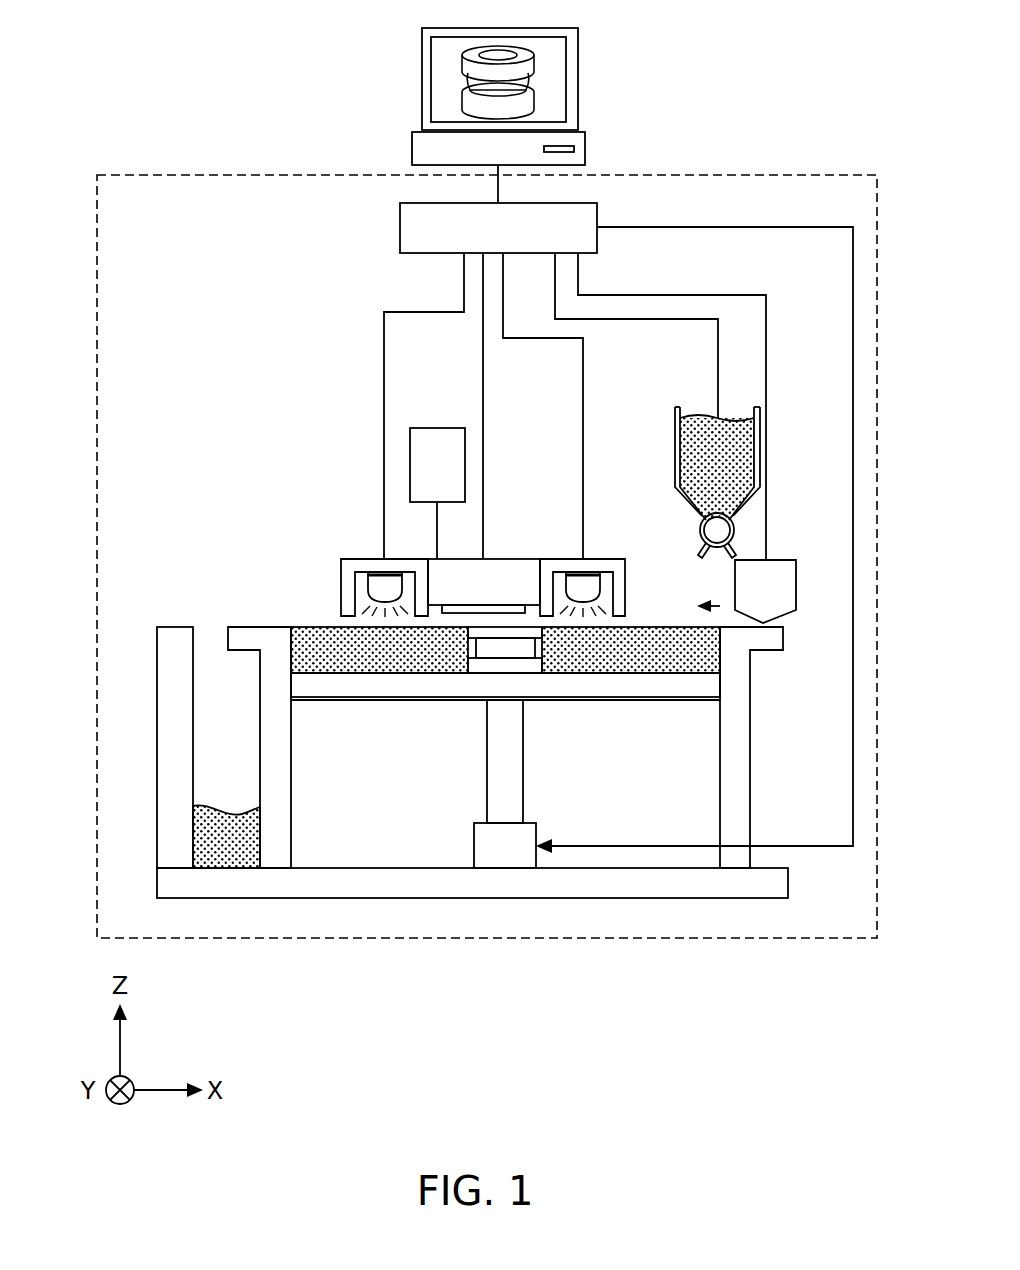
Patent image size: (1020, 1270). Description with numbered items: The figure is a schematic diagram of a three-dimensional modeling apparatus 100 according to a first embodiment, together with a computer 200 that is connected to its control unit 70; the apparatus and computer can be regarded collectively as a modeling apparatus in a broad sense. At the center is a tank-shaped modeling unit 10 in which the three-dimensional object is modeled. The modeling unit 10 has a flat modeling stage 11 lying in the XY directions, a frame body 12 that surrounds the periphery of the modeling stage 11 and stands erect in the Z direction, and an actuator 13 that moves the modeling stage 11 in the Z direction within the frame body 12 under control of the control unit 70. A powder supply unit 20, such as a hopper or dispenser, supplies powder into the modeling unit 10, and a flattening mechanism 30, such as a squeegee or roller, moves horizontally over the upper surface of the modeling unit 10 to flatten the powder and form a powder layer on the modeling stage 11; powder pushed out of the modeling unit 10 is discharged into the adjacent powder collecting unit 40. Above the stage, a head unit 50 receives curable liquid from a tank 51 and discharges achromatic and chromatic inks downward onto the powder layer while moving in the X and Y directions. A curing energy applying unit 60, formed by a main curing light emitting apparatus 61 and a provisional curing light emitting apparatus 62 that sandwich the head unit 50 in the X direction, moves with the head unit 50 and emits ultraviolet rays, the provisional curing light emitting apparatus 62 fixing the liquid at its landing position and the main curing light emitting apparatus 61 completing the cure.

The three-dimensional modeling apparatus 100 is at (220, 175).
The computer 200 is at (412, 150).
The control unit 70 is at (400, 227).
The tank 51 is at (437, 428).
The head unit 50 is at (513, 559).
The curing energy applying unit 60 is at (482, 539).
The main curing light emitting apparatus 61 is at (612, 559).
The provisional curing light emitting apparatus 62 is at (355, 559).
The powder supply unit 20 is at (675, 455).
The flattening mechanism 30 is at (796, 575).
The modeling unit 10 is at (472, 726).
The modeling stage 11 is at (345, 700).
The frame body 12 is at (720, 764).
The actuator 13 is at (474, 845).
The powder collecting unit 40 is at (193, 668).